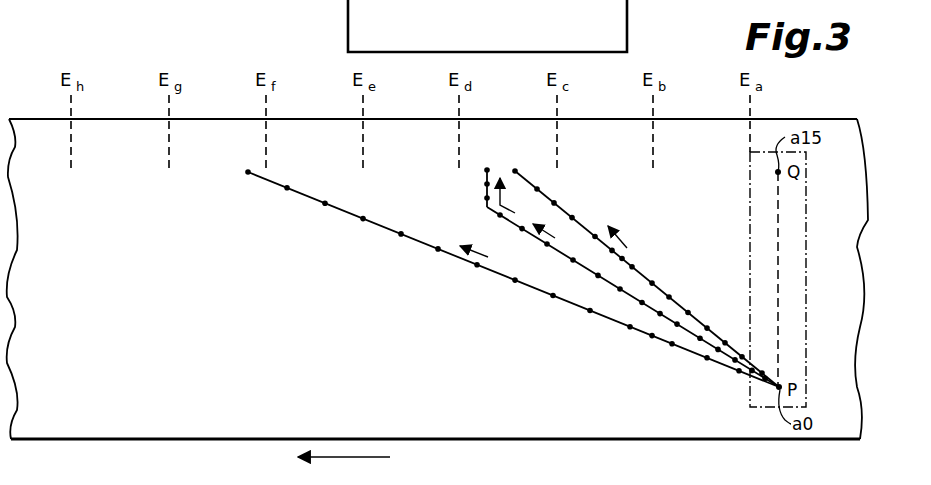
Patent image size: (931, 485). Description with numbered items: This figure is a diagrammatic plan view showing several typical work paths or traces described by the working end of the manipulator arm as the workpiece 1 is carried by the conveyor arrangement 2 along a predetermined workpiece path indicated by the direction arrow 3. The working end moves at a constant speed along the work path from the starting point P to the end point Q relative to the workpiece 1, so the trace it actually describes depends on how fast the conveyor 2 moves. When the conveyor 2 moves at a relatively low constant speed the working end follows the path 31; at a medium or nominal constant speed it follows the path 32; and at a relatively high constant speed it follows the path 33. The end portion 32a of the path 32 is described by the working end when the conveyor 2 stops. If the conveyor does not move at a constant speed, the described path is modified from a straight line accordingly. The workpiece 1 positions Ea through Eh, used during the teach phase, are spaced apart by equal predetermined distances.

The workpiece 1 is at (793, 273).
The conveyor arrangement 2 is at (515, 421).
The direction arrow 3 is at (365, 456).
The path 31 is at (660, 289).
The path 32 is at (615, 290).
The end portion of the path 32a is at (486, 191).
The path 33 is at (530, 290).